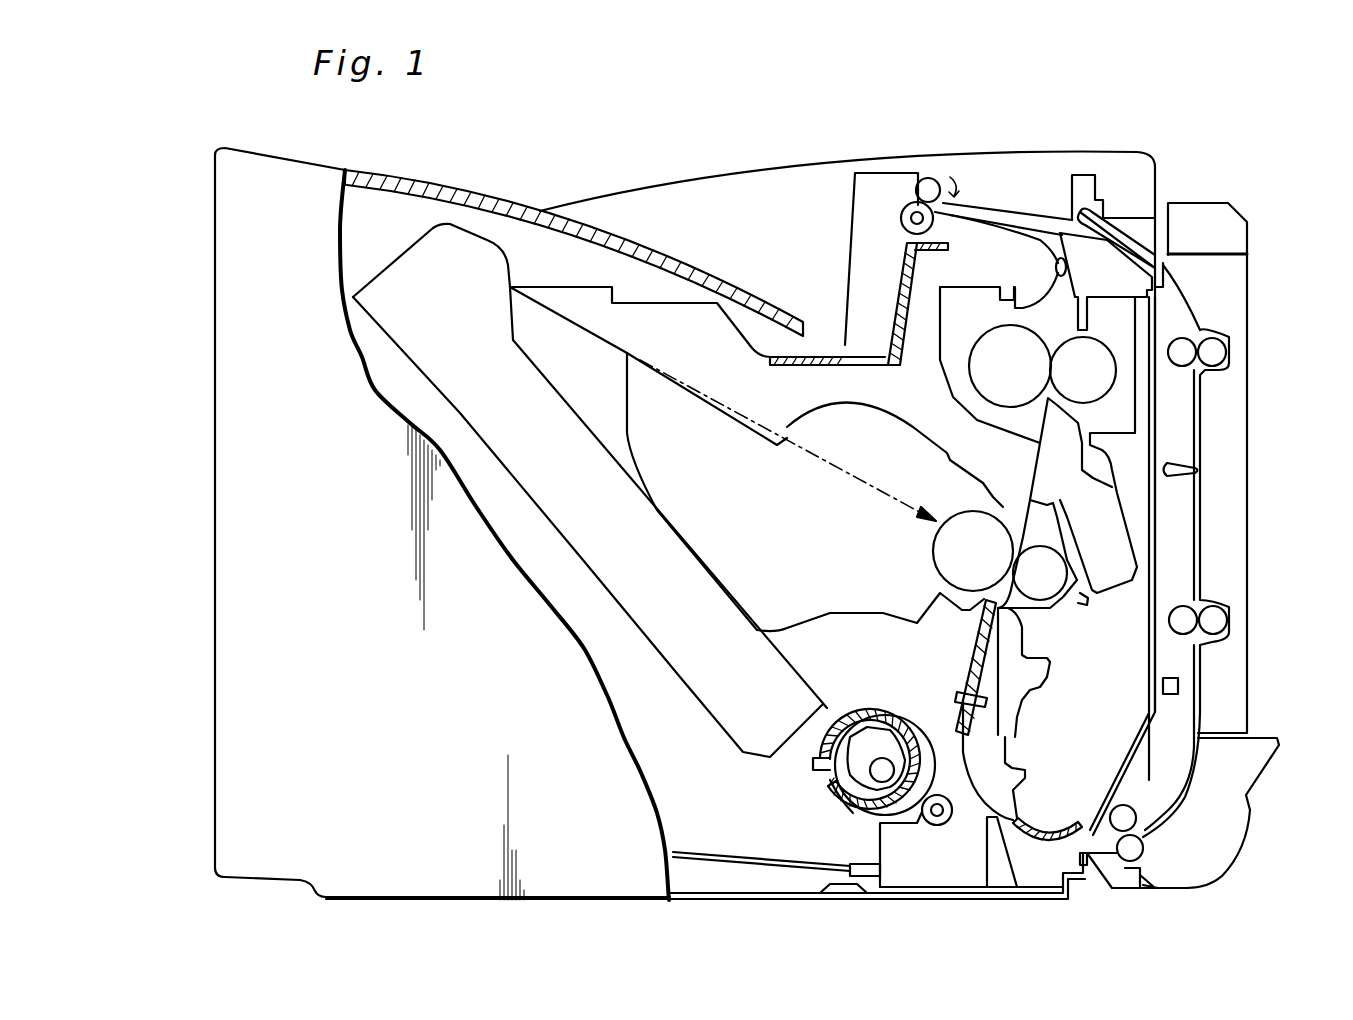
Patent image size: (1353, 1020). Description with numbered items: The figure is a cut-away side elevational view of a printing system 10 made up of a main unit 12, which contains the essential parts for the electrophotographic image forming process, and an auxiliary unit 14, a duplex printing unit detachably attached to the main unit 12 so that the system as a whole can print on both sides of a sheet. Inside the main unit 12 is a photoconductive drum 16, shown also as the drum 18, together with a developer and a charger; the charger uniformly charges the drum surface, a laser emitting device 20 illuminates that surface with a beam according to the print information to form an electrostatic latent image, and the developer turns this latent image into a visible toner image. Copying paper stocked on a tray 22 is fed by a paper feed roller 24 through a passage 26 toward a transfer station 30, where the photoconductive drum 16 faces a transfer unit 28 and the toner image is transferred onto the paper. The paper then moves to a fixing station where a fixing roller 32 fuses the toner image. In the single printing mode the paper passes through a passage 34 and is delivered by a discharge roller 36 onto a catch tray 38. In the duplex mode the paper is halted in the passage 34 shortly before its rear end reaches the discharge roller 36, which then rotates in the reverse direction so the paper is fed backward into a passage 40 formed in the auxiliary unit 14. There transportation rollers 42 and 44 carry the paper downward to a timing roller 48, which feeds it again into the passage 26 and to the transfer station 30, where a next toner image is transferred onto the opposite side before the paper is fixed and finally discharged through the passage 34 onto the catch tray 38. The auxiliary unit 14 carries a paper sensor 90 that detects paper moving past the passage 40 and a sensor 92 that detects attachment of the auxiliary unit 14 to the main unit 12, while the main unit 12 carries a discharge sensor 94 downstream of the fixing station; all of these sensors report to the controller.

The printing system 10 is at (771, 160).
The main unit 12 is at (255, 600).
The auxiliary unit 14 is at (1250, 490).
The photoconductive drum 16 is at (935, 551).
The photoconductive drum 18 is at (838, 617).
The laser emitting device 20 is at (715, 682).
The tray 22 is at (745, 862).
The paper feed roller 24 is at (878, 798).
The passage 26 is at (975, 730).
The transfer unit 28 is at (1046, 592).
The transfer station 30 is at (973, 551).
The fixing roller 32 is at (977, 377).
The passage 34 is at (1010, 218).
The discharge roller 36 is at (930, 177).
The catch tray 38 is at (757, 297).
The passage 40 is at (1197, 403).
The transportation roller 42 is at (1218, 352).
The transportation roller 44 is at (1218, 620).
The timing roller 48 is at (1135, 847).
The paper sensor 90 is at (1200, 470).
The sensor 92 is at (1180, 688).
The discharge sensor 94 is at (1055, 264).